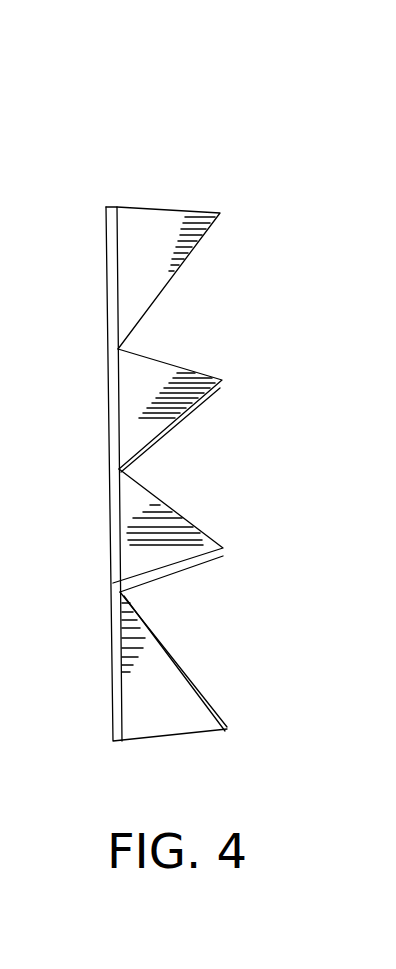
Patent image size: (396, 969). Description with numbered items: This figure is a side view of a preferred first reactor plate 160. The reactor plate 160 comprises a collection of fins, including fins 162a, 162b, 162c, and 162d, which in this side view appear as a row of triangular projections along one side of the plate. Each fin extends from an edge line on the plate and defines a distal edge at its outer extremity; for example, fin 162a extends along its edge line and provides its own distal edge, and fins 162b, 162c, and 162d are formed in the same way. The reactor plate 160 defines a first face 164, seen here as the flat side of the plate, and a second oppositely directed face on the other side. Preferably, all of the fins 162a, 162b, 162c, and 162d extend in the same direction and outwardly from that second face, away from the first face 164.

The first reactor plate 160 is at (222, 171).
The first face 164 is at (106, 240).
The fin 162a is at (148, 251).
The fin 162b is at (160, 555).
The fin 162c is at (162, 705).
The fin 162d is at (163, 398).